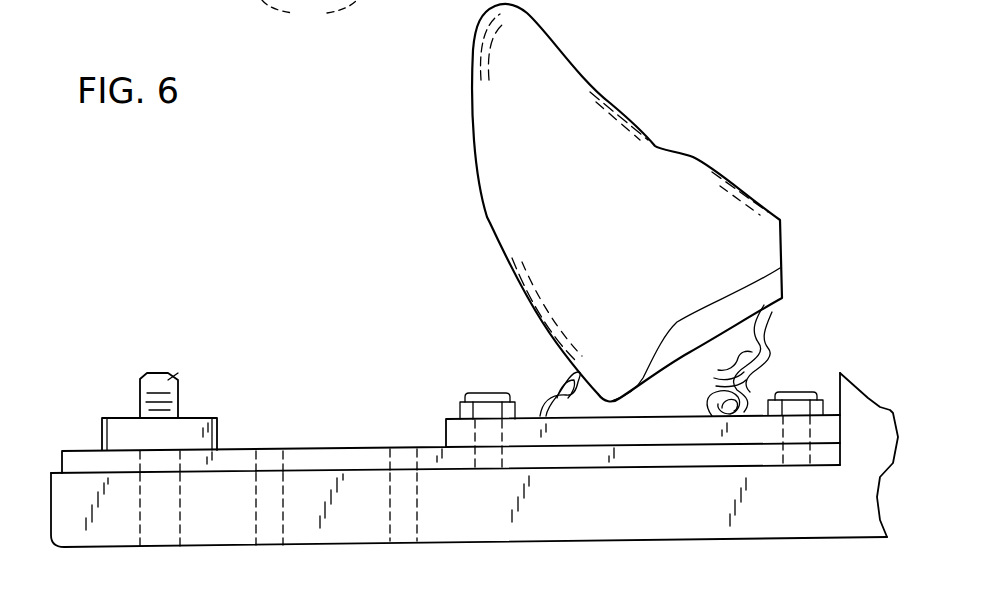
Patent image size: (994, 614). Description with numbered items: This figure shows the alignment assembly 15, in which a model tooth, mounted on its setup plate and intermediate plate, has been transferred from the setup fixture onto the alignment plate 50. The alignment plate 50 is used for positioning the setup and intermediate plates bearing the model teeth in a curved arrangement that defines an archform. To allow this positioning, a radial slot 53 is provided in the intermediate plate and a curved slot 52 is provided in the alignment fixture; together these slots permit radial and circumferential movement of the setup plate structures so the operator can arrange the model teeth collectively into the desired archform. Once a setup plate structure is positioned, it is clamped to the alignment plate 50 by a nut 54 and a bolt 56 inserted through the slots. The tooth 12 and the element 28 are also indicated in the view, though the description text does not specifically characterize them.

The workpiece / weld nugget 12 is at (627, 209).
The alignment assembly 15 is at (213, 251).
The electrode 28 is at (309, 12).
The alignment plate 50 is at (336, 487).
The curved slot 52 is at (157, 458).
The radial slot 53 is at (361, 450).
The nut 54 is at (173, 390).
The bolt 56 is at (217, 423).